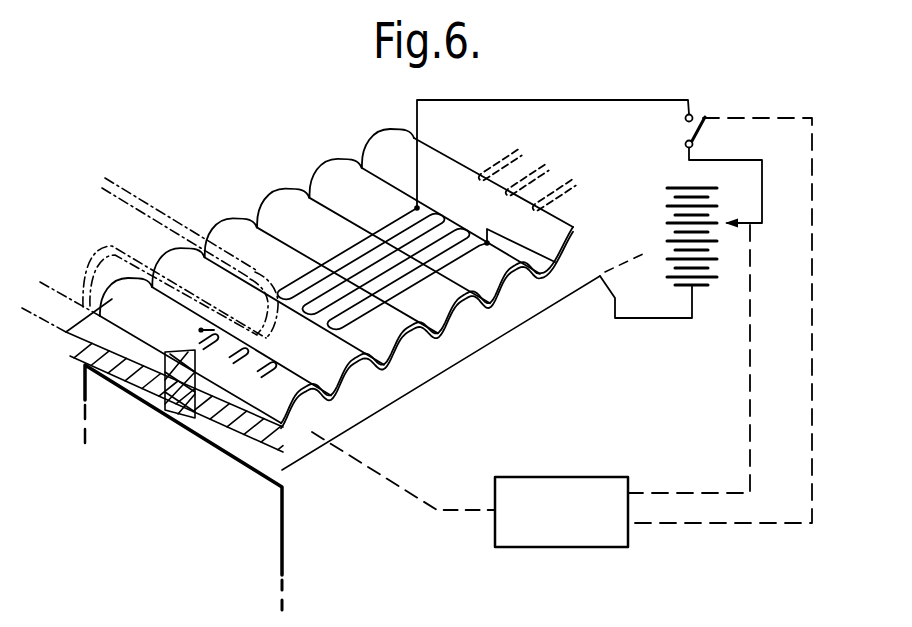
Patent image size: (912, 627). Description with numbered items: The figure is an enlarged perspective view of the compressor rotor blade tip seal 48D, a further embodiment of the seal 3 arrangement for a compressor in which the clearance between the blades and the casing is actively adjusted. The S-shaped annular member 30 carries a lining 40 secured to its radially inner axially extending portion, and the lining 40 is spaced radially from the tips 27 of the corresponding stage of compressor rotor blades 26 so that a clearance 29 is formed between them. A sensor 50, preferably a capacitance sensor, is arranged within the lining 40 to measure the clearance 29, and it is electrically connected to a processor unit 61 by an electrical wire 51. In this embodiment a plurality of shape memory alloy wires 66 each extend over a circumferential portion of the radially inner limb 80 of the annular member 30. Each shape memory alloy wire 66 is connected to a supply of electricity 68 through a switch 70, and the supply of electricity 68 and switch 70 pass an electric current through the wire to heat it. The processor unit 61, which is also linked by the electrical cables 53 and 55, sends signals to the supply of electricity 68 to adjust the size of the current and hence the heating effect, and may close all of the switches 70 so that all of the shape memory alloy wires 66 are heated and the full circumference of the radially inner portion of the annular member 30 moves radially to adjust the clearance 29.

The heating module 3 is at (360, 358).
The compressor rotor blades 26 is at (258, 557).
The tips 27 is at (262, 495).
The clearance 29 is at (191, 426).
The annular member 30 is at (573, 224).
The lining 40 is at (461, 344).
The compressor rotor blade tip seal 48D is at (521, 352).
The sensor 50 is at (160, 408).
The electrical wire 51 is at (380, 470).
The electrical cable 53 is at (748, 453).
The electrical cable 55 is at (812, 478).
The processor unit 61 is at (571, 500).
The shape memory alloy wires 66 is at (565, 200).
The supply of electricity 68 is at (666, 214).
The switch 70 is at (702, 136).
The radially inner limb 80 is at (92, 353).